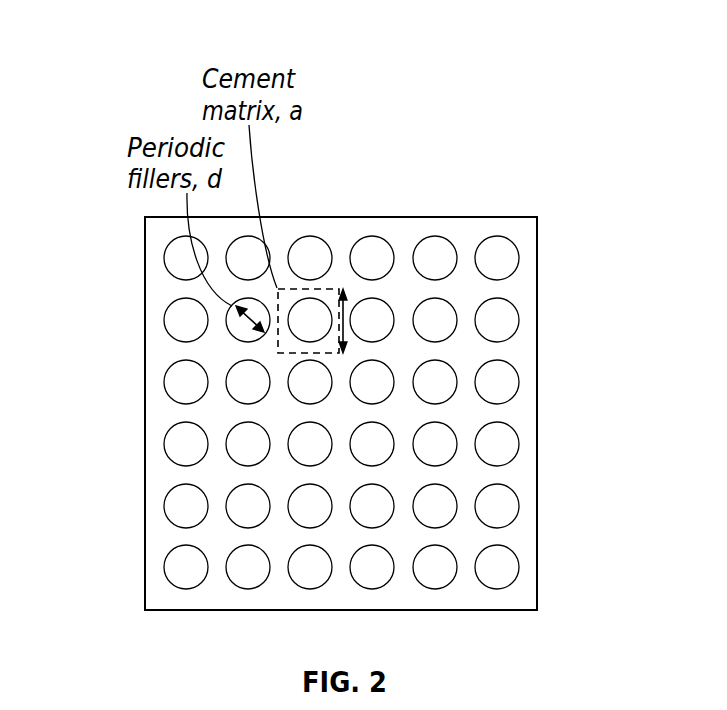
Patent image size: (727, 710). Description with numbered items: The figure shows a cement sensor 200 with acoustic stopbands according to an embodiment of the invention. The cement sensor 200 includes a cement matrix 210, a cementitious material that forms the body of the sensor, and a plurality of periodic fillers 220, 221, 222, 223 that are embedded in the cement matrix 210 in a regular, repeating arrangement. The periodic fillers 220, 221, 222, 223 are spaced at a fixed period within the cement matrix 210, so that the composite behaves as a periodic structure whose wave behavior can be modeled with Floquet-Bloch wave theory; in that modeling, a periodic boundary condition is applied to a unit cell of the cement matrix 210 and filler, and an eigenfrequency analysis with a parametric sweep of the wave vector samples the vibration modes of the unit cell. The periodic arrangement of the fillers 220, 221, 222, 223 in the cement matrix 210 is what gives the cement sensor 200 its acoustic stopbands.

The cement sensor 200 is at (537, 423).
The cement matrix 210 is at (332, 288).
The periodic filler 220 is at (226, 329).
The periodic filler 221 is at (187, 443).
The periodic filler 222 is at (245, 575).
The periodic filler 223 is at (508, 566).